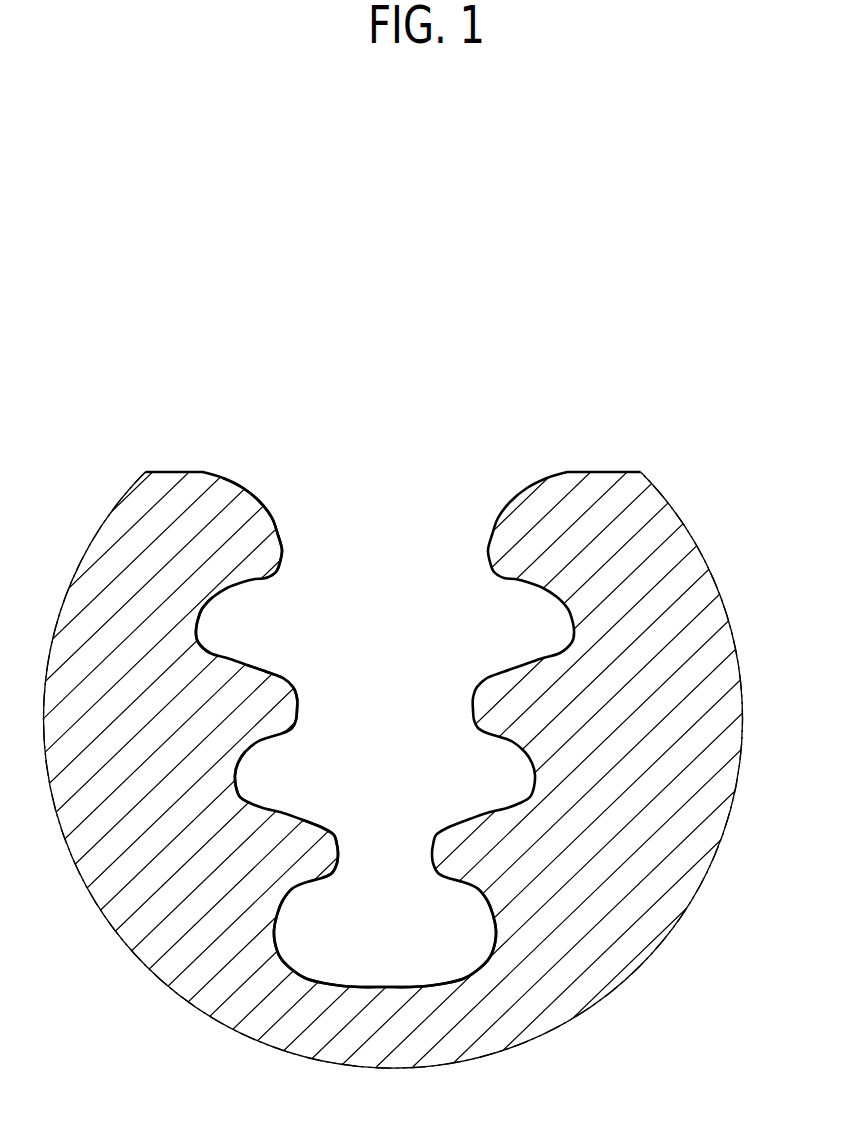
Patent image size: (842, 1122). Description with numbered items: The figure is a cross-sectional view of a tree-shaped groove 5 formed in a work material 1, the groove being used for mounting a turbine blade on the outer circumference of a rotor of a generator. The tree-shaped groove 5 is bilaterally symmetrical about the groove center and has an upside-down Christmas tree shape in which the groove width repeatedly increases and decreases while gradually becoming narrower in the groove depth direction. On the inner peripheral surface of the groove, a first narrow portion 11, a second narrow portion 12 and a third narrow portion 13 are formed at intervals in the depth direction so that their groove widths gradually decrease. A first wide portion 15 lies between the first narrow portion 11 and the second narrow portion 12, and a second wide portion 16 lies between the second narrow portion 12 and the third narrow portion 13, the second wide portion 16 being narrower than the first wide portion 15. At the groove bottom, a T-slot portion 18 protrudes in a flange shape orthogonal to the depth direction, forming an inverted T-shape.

The work material 1 is at (582, 472).
The tree-shaped groove 5 is at (383, 490).
The first narrow portion 11 is at (300, 552).
The second narrow portion 12 is at (317, 708).
The third narrow portion 13 is at (353, 853).
The first wide portion 15 is at (217, 631).
The second wide portion 16 is at (255, 777).
The T-slot portion 18 is at (392, 935).